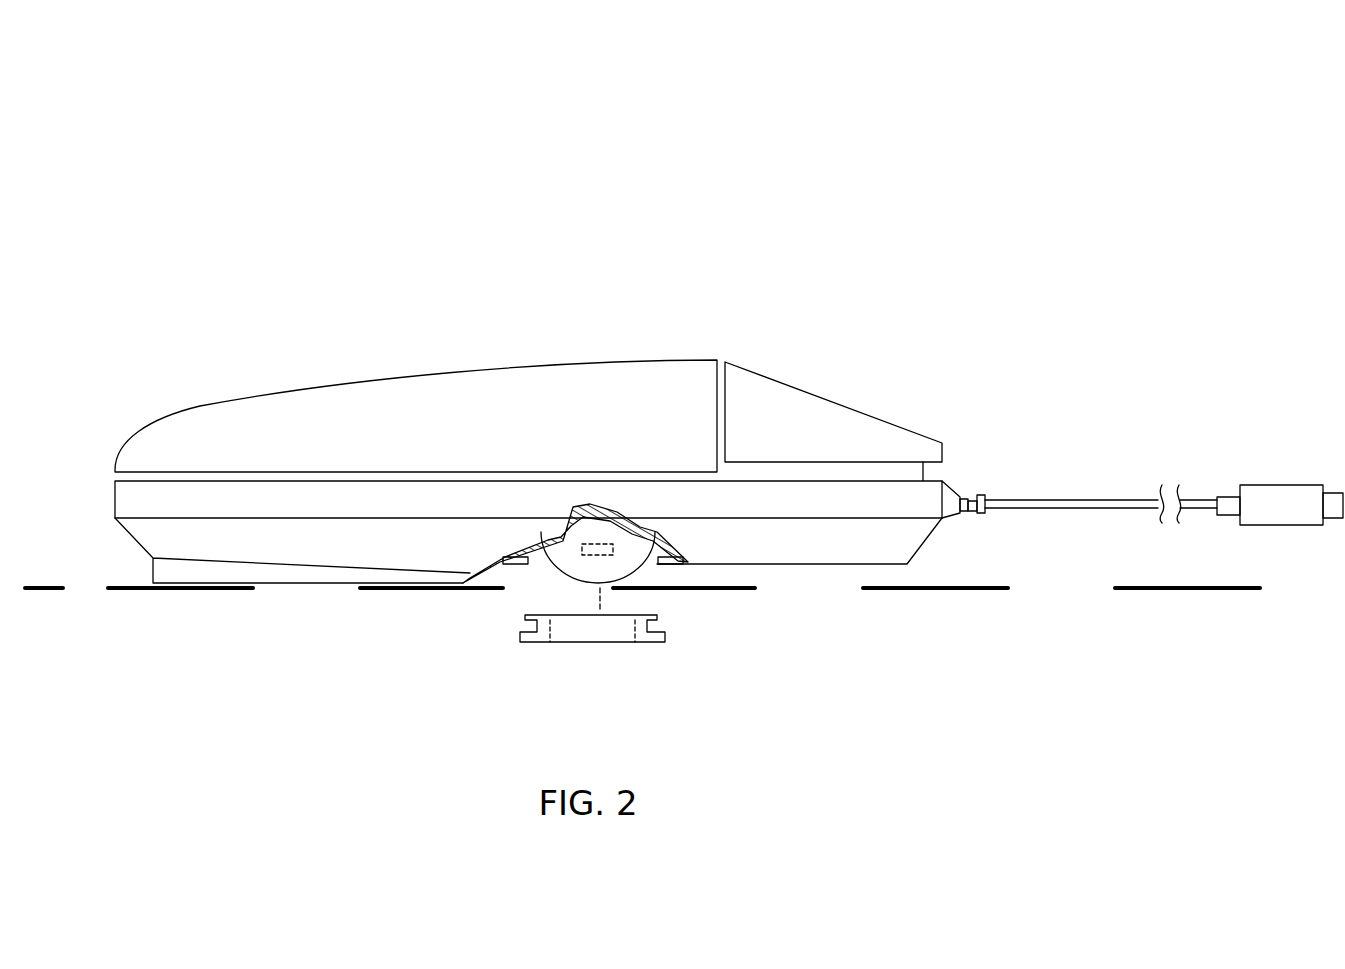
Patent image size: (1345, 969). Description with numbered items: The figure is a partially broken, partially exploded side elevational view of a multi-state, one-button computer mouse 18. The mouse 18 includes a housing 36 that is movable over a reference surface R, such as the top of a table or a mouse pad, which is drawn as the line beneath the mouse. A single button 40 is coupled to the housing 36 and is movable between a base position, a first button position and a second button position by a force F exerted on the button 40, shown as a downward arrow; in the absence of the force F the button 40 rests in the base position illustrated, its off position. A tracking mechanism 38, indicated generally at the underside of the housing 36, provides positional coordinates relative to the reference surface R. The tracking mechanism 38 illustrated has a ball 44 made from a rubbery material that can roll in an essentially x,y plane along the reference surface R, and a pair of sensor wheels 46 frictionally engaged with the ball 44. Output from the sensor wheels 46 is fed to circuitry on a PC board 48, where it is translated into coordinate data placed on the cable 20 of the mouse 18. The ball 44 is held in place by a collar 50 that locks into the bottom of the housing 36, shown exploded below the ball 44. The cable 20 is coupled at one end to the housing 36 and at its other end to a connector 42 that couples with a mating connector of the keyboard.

The multi-state, one-button computer mouse 18 is at (822, 172).
The cable 20 is at (1055, 502).
The housing 36 is at (425, 360).
The tracking mechanism 38 is at (506, 600).
The single button 40 is at (829, 366).
The connector 42 is at (1278, 490).
The ball 44 is at (638, 567).
The sensor wheels 46 is at (595, 540).
The PC board 48 is at (507, 567).
The collar 50 is at (645, 638).
The reference surface R is at (35, 582).
The force F is at (931, 355).